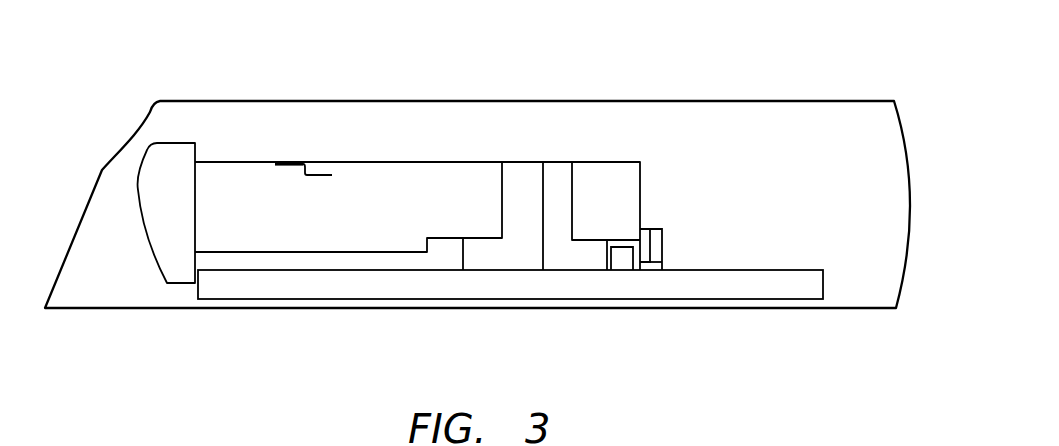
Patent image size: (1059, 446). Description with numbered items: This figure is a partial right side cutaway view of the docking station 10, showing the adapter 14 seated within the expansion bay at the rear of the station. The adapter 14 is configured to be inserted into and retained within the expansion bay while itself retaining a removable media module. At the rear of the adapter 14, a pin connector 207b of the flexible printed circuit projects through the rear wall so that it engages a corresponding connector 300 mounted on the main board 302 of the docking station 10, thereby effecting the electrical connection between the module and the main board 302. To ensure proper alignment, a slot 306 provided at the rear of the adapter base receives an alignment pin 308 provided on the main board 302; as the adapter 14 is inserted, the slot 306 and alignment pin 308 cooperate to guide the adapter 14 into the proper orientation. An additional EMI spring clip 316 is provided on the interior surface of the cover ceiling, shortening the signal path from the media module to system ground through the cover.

The docking station 10 is at (911, 122).
The adapter 14 is at (251, 239).
The EMI spring clip 316 is at (335, 203).
The slot 306 is at (593, 323).
The alignment pin 308 is at (642, 323).
The pin connector 207b is at (660, 200).
The connector 300 is at (697, 238).
The main board 302 is at (788, 244).